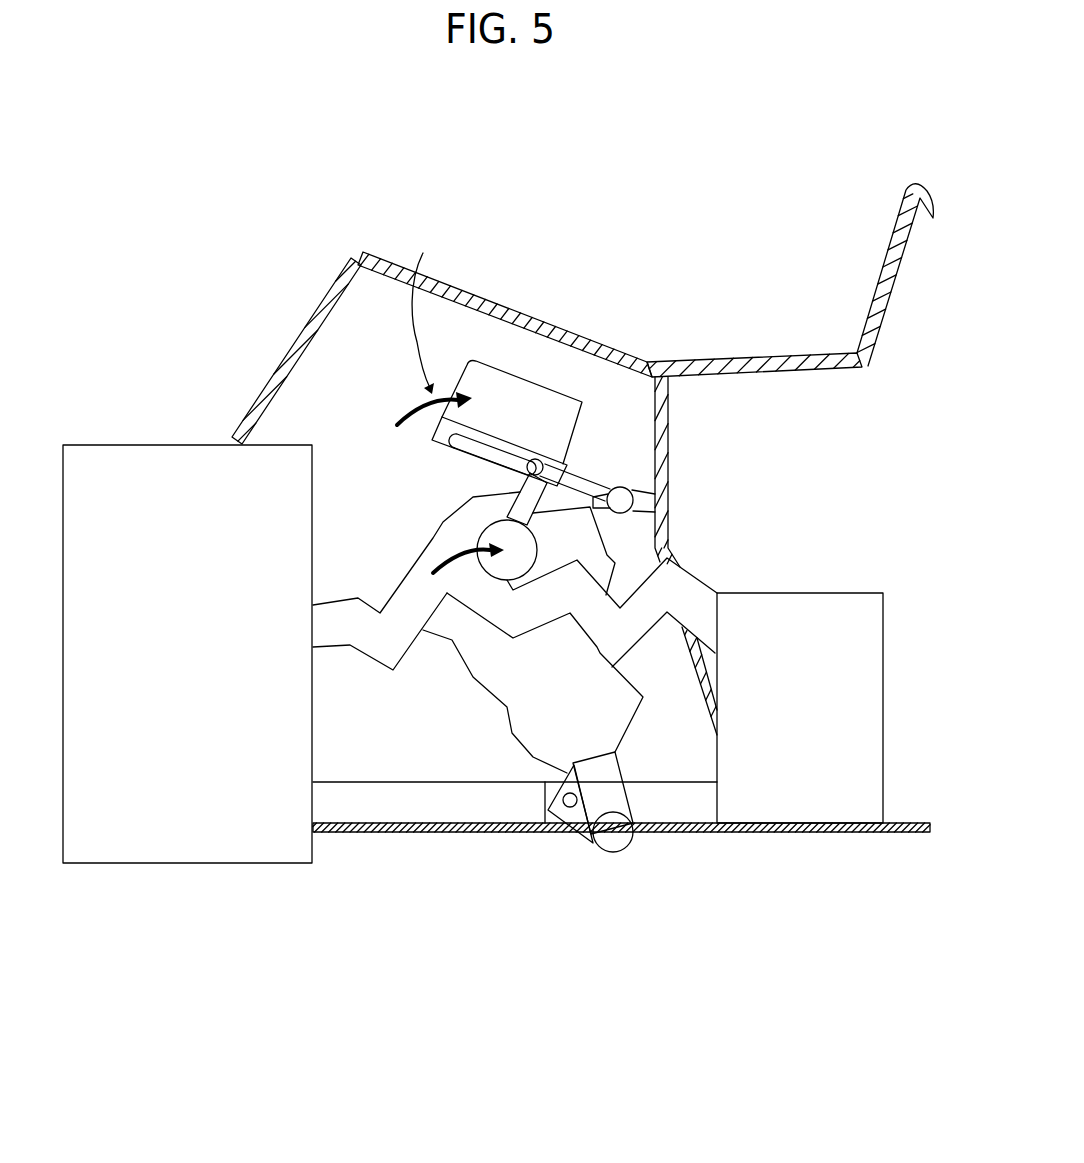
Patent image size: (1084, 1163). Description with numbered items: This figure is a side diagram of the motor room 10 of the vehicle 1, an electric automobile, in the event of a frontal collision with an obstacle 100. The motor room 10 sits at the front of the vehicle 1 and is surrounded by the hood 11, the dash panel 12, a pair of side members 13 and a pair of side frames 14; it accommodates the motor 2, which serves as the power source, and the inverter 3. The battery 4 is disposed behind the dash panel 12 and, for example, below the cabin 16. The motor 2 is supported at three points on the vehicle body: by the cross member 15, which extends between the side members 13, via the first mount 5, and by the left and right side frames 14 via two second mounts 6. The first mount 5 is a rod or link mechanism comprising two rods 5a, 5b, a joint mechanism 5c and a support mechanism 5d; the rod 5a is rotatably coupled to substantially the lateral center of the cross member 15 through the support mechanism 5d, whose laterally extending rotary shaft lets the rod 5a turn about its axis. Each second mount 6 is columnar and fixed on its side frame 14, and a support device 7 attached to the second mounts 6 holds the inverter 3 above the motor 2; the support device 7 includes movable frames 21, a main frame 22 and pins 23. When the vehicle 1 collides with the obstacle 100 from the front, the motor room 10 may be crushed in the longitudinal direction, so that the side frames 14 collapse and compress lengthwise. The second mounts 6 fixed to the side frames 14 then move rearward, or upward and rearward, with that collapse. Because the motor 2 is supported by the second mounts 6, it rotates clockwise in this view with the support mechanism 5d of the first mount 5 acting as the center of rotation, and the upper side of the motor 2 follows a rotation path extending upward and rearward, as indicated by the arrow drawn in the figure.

The vehicle 1 is at (712, 210).
The motor 2 is at (491, 709).
The inverter 3 is at (550, 388).
The battery 4 is at (830, 807).
The first mount 5 is at (620, 861).
The rod 5a is at (587, 851).
The rod 5b is at (620, 772).
The joint mechanism 5c is at (640, 851).
The support mechanism 5d is at (567, 832).
The second mount 6 is at (443, 523).
The support device 7 is at (427, 259).
The motor room 10 is at (371, 529).
The hood 11 is at (341, 273).
The dash panel 12 is at (670, 452).
The side member 13 is at (367, 807).
The side frame 14 is at (393, 633).
The cross member 15 is at (517, 748).
The cabin 16 is at (796, 461).
The movable frame 21 is at (498, 440).
The main frame 22 is at (560, 486).
The pin 23 is at (622, 488).
The obstacle 100 is at (169, 654).